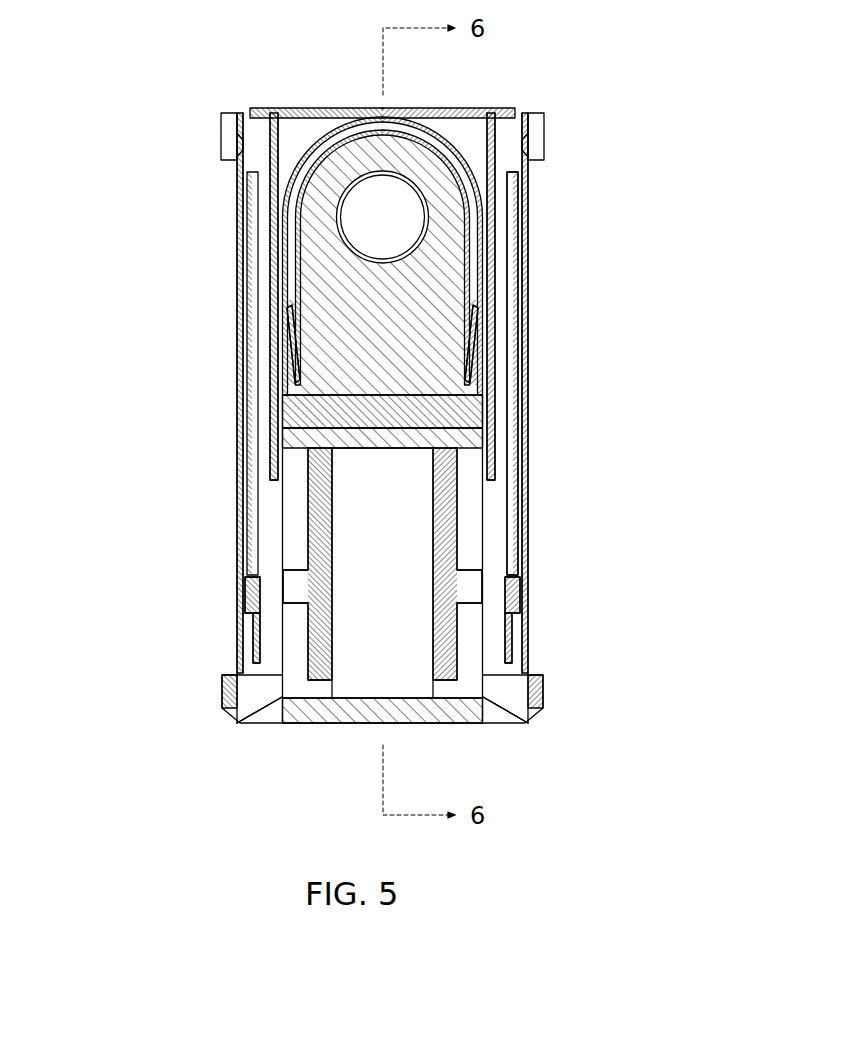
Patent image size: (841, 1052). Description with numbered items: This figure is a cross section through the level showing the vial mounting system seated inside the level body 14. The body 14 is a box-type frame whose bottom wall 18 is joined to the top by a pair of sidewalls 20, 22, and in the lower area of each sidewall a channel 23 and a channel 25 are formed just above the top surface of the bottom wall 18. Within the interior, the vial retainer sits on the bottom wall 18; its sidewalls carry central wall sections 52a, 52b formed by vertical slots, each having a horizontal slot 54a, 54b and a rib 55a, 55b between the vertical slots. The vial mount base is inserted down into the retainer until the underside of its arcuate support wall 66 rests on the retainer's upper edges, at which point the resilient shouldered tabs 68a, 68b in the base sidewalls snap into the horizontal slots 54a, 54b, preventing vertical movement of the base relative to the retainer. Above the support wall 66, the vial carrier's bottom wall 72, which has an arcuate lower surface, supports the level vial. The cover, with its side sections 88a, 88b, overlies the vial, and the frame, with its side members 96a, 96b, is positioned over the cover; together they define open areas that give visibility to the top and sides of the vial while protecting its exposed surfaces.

The level body 14 is at (526, 520).
The bottom wall 18 is at (345, 727).
The sidewall 20 is at (237, 491).
The sidewall 22 is at (528, 472).
The channel 23 is at (290, 707).
The channel 25 is at (482, 712).
The central wall section 52a is at (256, 628).
The central wall section 52b is at (488, 624).
The horizontal slot 54a is at (308, 603).
The horizontal slot 54b is at (480, 597).
The rib 55a is at (226, 684).
The rib 55b is at (530, 682).
The support wall 66 is at (283, 413).
The resilient shouldered tab 68a is at (305, 571).
The resilient shouldered tab 68b is at (478, 576).
The bottom wall 72 is at (342, 432).
The side section 88a is at (276, 330).
The side section 88b is at (493, 335).
The side member 96a is at (290, 348).
The side member 96b is at (482, 355).